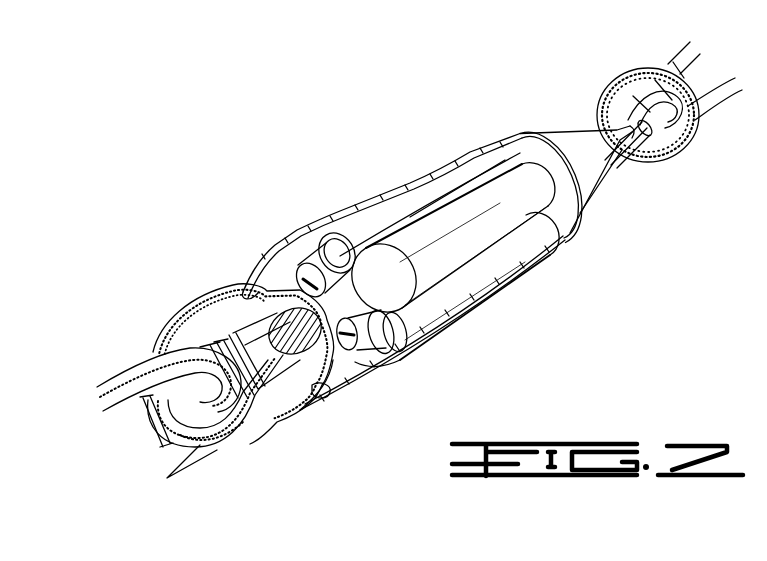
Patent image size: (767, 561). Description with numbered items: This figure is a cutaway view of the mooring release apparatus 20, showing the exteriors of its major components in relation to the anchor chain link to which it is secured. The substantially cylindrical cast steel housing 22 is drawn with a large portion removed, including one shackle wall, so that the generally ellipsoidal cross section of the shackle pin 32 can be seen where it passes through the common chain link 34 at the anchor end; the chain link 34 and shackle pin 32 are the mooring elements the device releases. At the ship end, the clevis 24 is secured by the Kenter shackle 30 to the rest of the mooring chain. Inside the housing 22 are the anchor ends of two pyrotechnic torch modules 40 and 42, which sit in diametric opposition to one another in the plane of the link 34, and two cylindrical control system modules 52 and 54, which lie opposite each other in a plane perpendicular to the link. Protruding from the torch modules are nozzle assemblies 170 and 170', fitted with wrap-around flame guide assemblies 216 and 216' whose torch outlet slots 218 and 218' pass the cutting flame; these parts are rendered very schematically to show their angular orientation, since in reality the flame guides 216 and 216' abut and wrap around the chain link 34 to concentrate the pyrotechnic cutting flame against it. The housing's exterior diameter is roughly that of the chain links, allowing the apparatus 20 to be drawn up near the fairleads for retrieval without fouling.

The mooring release apparatus 20 is at (575, 263).
The housing 22 is at (424, 172).
The clevis 24 is at (626, 138).
The Kenter shackle 30 is at (668, 148).
The shackle pin 32 is at (283, 310).
The chain link 34 is at (208, 318).
The torch module 40 is at (382, 213).
The torch module 42 is at (432, 305).
The control system module 52 is at (453, 242).
The control system module 54 is at (316, 400).
The nozzle assembly 170 is at (320, 229).
The nozzle assembly 170' is at (387, 357).
The wrap-around flame guide assembly 216 is at (308, 227).
The wrap-around flame guide assembly 216' is at (390, 366).
The torch outlet slot 218 is at (269, 243).
The torch outlet slot 218' is at (363, 390).